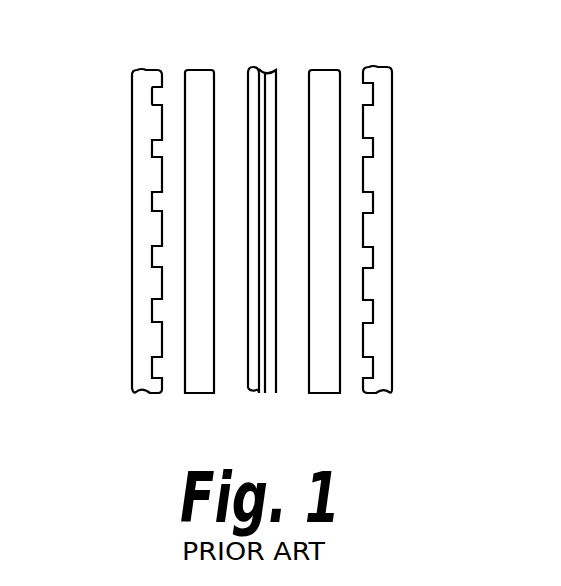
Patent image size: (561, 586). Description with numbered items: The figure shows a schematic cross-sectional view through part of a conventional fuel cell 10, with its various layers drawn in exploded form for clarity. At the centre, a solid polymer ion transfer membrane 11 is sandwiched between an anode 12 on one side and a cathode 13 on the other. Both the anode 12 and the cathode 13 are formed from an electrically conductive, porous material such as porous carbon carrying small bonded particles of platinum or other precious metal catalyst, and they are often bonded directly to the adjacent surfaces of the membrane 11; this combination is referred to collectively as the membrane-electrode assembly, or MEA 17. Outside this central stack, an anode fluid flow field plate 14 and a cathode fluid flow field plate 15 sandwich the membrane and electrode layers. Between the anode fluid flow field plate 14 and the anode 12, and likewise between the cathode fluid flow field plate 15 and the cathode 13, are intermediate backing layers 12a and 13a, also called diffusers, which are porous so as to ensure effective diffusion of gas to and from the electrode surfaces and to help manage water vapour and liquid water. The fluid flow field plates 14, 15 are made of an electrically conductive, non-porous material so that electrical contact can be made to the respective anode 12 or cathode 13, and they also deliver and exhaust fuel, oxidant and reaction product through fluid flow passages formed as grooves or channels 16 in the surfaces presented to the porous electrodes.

The fuel cell 10 is at (118, 64).
The solid polymer ion transfer membrane 11 is at (258, 387).
The anode 12 is at (248, 382).
The intermediate backing layer 12a is at (197, 87).
The cathode 13 is at (268, 368).
The intermediate backing layer 13a is at (328, 95).
The anode fluid flow field plate 14 is at (142, 387).
The cathode fluid flow field plate 15 is at (375, 382).
The channels 16 is at (159, 151).
The membrane-electrode assembly 17 is at (287, 59).